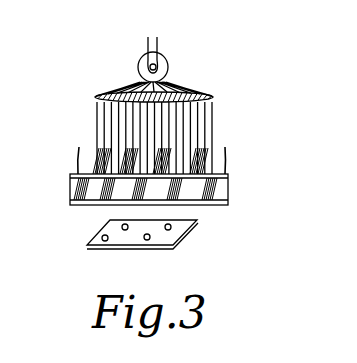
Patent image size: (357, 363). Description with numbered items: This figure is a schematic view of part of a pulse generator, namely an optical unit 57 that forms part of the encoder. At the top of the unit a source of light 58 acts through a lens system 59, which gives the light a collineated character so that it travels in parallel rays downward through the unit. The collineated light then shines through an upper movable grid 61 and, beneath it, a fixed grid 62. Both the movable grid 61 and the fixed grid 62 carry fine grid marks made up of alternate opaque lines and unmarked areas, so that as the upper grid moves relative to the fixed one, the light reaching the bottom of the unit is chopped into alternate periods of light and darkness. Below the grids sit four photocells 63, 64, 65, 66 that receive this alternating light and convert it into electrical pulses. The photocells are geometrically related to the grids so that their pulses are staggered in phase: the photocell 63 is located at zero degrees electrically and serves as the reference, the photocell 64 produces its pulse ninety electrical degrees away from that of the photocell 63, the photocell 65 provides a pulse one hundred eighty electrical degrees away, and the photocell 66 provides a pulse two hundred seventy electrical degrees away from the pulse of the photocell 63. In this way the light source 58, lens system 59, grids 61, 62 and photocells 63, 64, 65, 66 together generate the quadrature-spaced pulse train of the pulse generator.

The optical unit 57 is at (226, 158).
The source of light 58 is at (168, 62).
The lens system 59 is at (205, 96).
The upper movable grid 61 is at (78, 155).
The fixed grid 62 is at (72, 190).
The photocell 63 is at (103, 241).
The photocell 64 is at (124, 230).
The photocell 65 is at (146, 240).
The photocell 66 is at (170, 230).